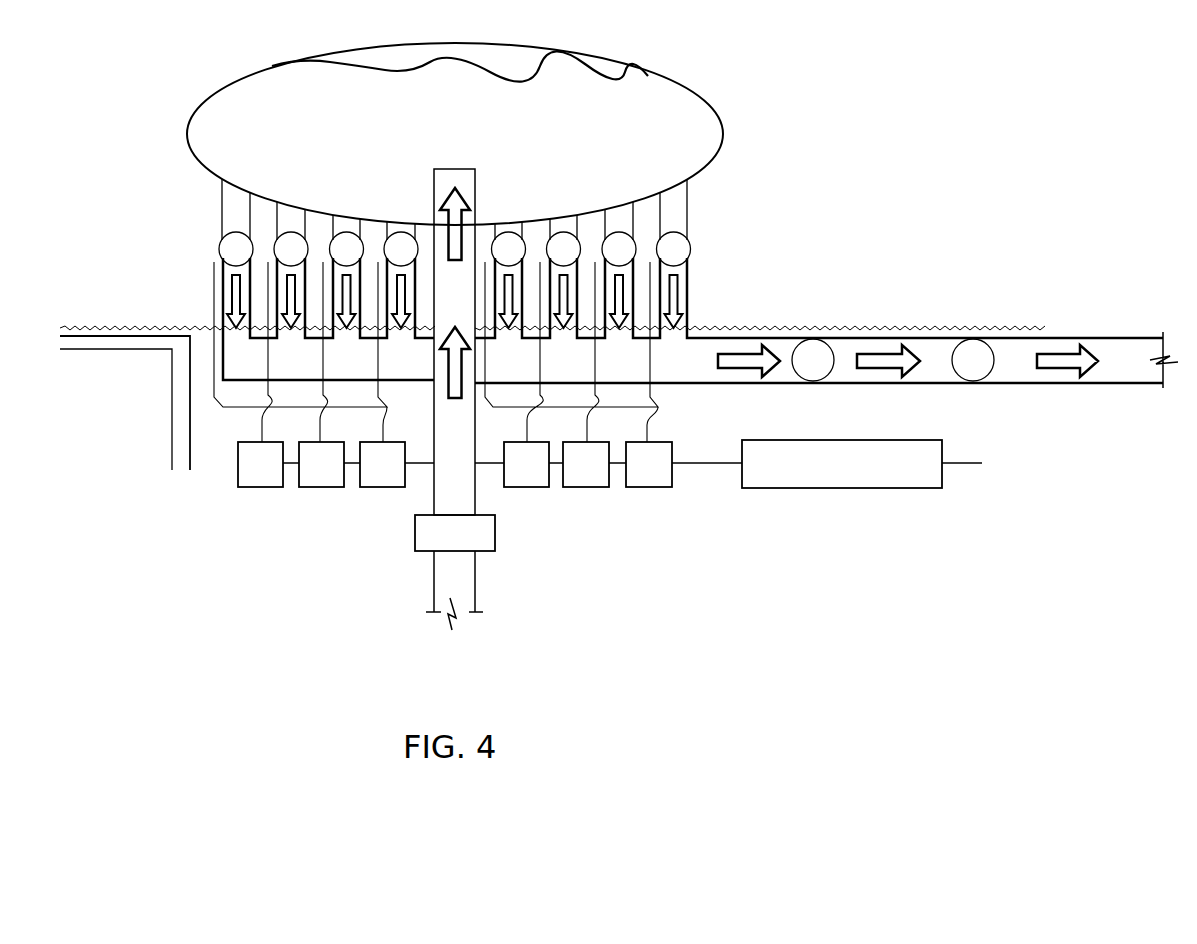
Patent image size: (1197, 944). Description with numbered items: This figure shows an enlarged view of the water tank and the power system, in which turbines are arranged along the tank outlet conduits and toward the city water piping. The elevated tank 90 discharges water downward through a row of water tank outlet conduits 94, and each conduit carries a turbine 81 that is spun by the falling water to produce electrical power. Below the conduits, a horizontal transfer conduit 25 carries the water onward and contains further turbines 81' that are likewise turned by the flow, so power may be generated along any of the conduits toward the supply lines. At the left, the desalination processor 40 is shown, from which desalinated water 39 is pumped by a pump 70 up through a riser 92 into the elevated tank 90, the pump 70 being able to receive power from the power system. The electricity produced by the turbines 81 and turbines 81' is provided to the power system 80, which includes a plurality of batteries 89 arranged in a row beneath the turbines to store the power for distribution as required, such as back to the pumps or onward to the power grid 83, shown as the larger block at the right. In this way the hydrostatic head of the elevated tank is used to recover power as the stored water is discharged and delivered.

The elevated tank 90 is at (652, 115).
The water tank outlet conduits 94 is at (677, 197).
The turbines 81 is at (493, 247).
The transfer conduit 25 is at (895, 325).
The turbines 81' is at (899, 325).
The desalination processor 40 is at (100, 387).
The return riser 92 is at (445, 500).
The pump 70 is at (485, 528).
The desalinated water 39 is at (466, 575).
The battery 89 is at (257, 478).
The power system 80 is at (682, 497).
The power grid 83 is at (915, 463).